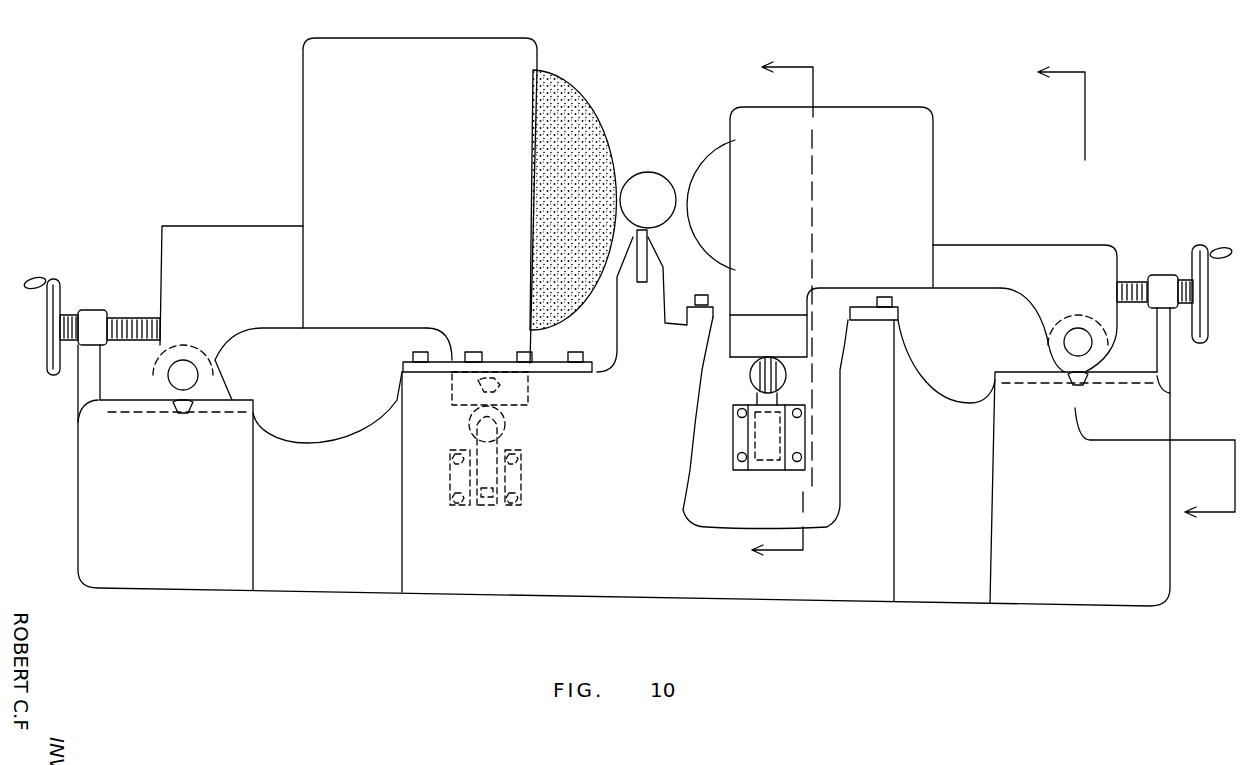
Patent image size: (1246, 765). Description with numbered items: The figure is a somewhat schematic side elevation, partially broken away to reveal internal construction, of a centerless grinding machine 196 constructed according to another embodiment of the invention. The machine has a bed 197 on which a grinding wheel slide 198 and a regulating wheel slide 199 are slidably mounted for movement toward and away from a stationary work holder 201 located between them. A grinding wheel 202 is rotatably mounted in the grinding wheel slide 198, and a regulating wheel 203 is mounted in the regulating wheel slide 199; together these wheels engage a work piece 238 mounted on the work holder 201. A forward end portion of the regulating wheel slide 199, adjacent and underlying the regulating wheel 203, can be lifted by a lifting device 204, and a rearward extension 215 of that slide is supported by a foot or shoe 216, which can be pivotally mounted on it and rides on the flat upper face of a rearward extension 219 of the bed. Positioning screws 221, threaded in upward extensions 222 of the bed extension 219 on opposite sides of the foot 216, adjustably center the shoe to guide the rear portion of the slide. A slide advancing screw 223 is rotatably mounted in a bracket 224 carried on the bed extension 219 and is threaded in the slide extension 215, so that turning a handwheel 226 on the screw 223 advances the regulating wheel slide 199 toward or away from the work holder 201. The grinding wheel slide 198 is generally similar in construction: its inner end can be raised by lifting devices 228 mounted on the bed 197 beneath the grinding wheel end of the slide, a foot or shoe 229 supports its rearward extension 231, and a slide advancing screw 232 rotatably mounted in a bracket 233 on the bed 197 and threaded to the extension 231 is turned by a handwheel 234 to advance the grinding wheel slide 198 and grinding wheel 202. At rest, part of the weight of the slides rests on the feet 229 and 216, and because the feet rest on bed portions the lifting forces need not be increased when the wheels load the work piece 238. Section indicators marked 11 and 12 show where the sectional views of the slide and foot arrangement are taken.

The centerless grinding machine 196 is at (863, 634).
The bed 197 is at (450, 583).
The grinding wheel slide 198 is at (507, 68).
The regulating wheel slide 199 is at (912, 165).
The work holder 201 is at (637, 285).
The grinding wheel 202 is at (580, 122).
The regulating wheel 203 is at (713, 157).
The lifting device 204 is at (807, 435).
The rearward extension of the regulating wheel slide 215 is at (993, 258).
The foot or shoe 216 is at (1040, 355).
The rearward extension of the bed 219 is at (1080, 595).
The positioning screw 221 is at (1080, 388).
The upward extension of the bed extension 222 is at (1023, 377).
The slide advancing screw 223 is at (1127, 282).
The bracket 224 is at (1165, 367).
The handwheel 226 is at (1200, 243).
The lifting device 228 is at (522, 487).
The foot or shoe 229 is at (217, 383).
The rearward extension of the grinding wheel slide 231 is at (205, 238).
The slide advancing screw 232 is at (110, 315).
The bracket 233 is at (90, 397).
The handwheel 234 is at (58, 268).
The work piece 238 is at (641, 187).
The section line 11- 11 is at (791, 306).
The section line 12- 12 is at (1141, 295).